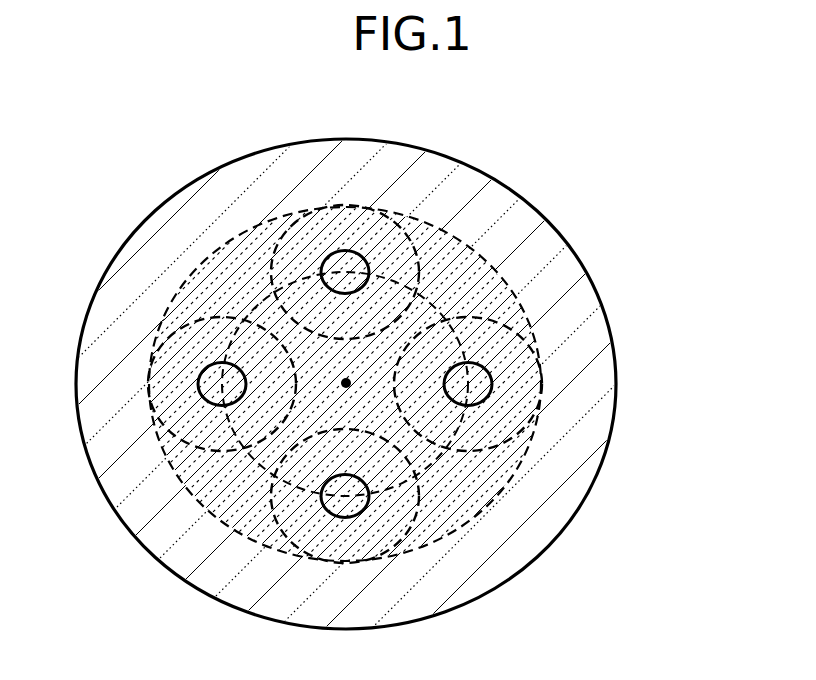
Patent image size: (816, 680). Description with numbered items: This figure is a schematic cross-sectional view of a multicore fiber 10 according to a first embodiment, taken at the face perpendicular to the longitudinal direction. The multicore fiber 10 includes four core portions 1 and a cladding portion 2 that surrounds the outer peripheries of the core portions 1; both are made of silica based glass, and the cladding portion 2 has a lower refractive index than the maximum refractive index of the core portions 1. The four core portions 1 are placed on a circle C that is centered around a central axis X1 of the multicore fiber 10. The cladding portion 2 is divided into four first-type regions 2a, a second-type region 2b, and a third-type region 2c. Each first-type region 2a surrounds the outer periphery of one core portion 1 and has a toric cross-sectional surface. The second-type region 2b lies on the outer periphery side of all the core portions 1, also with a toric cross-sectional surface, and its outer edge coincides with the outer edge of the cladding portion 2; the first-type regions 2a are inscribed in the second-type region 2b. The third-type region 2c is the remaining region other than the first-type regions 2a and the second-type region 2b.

The multicore fiber 10 is at (535, 162).
The core portions 1 is at (494, 386).
The cladding portion 2 is at (690, 435).
The first-type regions 2a is at (513, 415).
The second-type region 2b is at (560, 465).
The third-type region 2c is at (483, 485).
The circle C is at (432, 305).
The central axis X1 is at (346, 383).